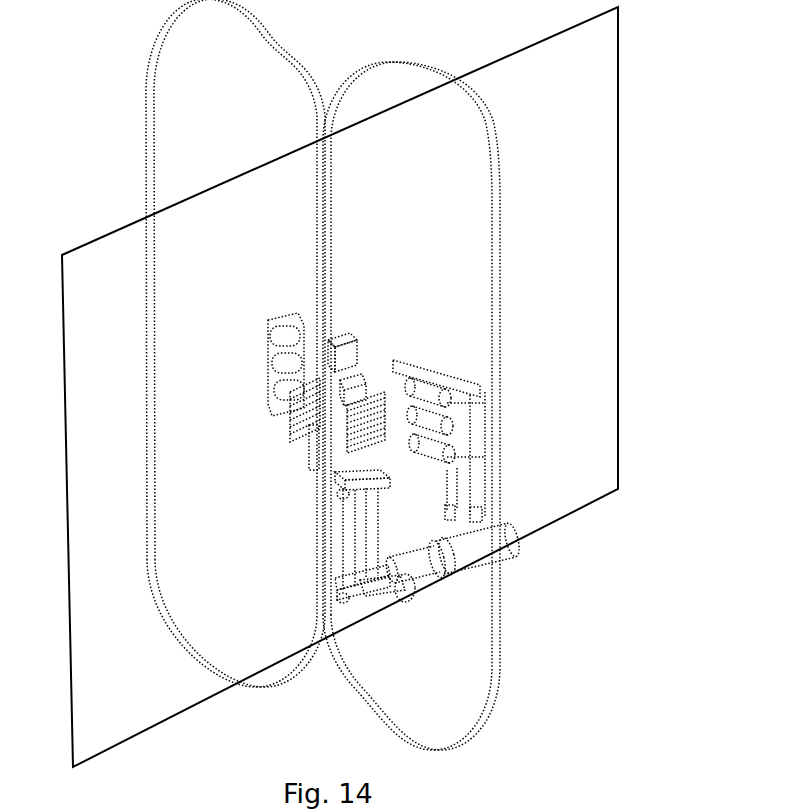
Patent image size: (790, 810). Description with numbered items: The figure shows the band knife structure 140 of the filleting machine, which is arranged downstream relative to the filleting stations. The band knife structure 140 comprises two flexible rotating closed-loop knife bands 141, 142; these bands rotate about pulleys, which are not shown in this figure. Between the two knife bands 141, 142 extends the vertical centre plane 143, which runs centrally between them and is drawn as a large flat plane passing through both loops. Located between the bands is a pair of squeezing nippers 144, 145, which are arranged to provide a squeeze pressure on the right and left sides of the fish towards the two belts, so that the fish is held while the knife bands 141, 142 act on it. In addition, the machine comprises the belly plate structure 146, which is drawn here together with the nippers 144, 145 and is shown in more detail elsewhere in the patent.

The band knife structure 140 is at (612, 64).
The knife band 141 is at (495, 258).
The knife band 142 is at (155, 212).
The vertical centre plane 143 is at (618, 427).
The squeezing nipper 144 is at (365, 397).
The squeezing nipper 145 is at (303, 403).
The belly plate structure 146 is at (367, 367).